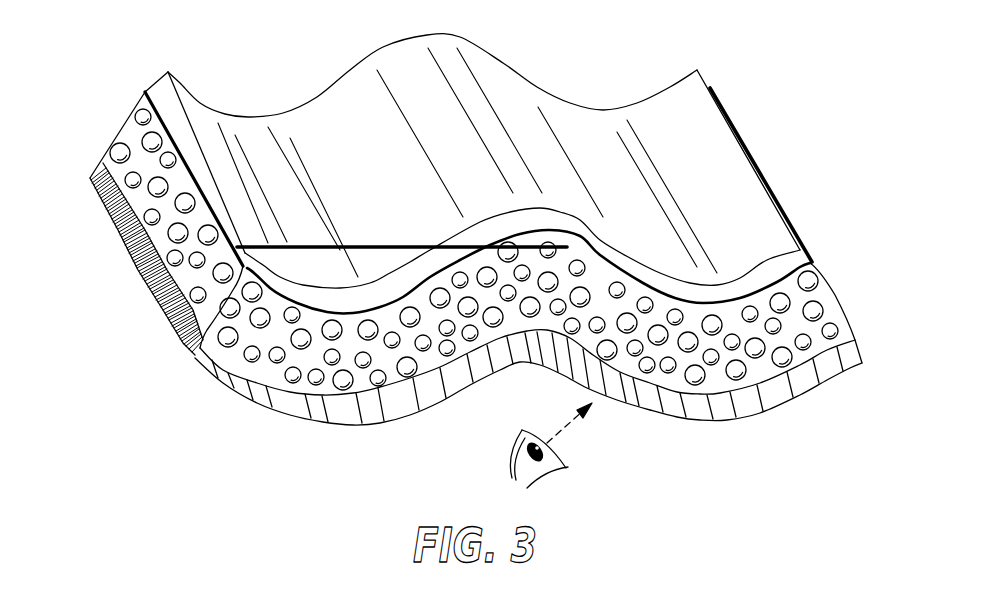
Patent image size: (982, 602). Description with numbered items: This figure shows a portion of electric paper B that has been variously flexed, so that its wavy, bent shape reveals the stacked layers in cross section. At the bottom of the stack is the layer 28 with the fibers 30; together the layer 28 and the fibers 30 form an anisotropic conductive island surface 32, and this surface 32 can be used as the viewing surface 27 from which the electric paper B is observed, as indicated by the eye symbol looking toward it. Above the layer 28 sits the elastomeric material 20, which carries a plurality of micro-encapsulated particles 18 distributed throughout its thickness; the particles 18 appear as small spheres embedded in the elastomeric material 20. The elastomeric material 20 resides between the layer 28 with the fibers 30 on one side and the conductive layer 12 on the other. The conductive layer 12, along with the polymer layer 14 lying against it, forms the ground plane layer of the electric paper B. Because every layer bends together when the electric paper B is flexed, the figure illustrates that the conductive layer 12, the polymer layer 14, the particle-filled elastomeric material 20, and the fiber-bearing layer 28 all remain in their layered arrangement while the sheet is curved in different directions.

The conductive layer 12 is at (813, 268).
The polymer layer 14 is at (793, 260).
The micro-encapsulated particles 18 is at (150, 137).
The elastomeric material 20 is at (122, 137).
The viewing surface 27 is at (517, 458).
The layer 28 is at (132, 253).
The fibers 30 is at (253, 393).
The anisotropic conductive island surface 32 is at (473, 392).
The electric paper B is at (601, 52).